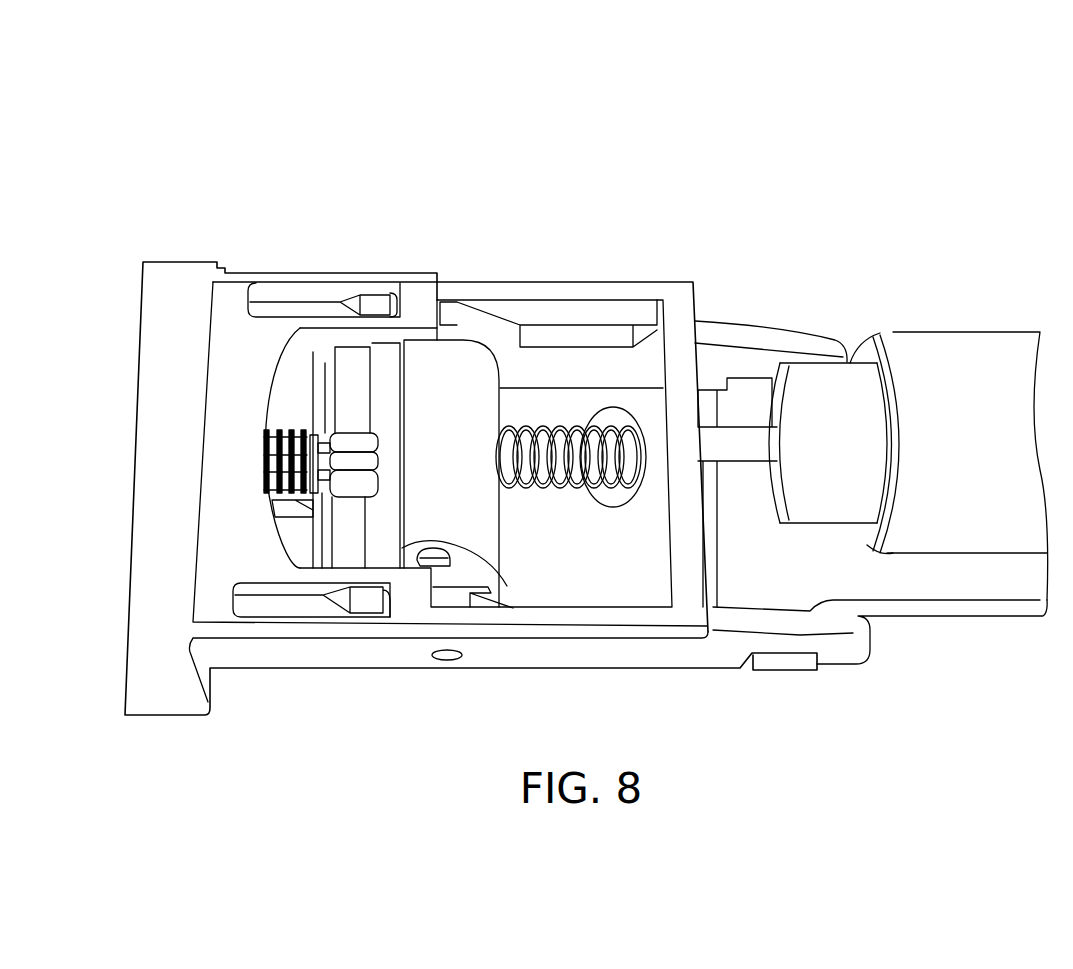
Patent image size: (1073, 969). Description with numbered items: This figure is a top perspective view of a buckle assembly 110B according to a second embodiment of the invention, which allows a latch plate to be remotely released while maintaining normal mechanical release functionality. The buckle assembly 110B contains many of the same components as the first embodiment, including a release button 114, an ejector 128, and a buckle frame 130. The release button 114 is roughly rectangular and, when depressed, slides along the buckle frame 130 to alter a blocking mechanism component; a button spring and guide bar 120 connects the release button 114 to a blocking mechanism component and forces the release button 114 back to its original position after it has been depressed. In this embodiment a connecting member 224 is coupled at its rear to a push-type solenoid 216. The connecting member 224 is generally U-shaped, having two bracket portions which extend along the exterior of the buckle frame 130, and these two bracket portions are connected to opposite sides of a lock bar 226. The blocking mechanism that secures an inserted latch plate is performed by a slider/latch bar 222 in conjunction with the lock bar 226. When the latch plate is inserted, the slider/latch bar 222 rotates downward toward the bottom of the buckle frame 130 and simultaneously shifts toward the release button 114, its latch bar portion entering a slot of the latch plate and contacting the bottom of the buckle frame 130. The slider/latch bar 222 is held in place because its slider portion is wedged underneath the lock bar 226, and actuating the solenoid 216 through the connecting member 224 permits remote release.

The buckle assembly 110B is at (212, 125).
The release button 114 is at (160, 338).
The button spring and guide bar 120 is at (285, 470).
The ejector 128 is at (563, 490).
The buckle frame 130 is at (563, 362).
The push-type solenoid 216 is at (826, 451).
The slider/latch bar 222 is at (500, 586).
The connecting member 224 is at (610, 285).
The lock bar 226 is at (348, 408).